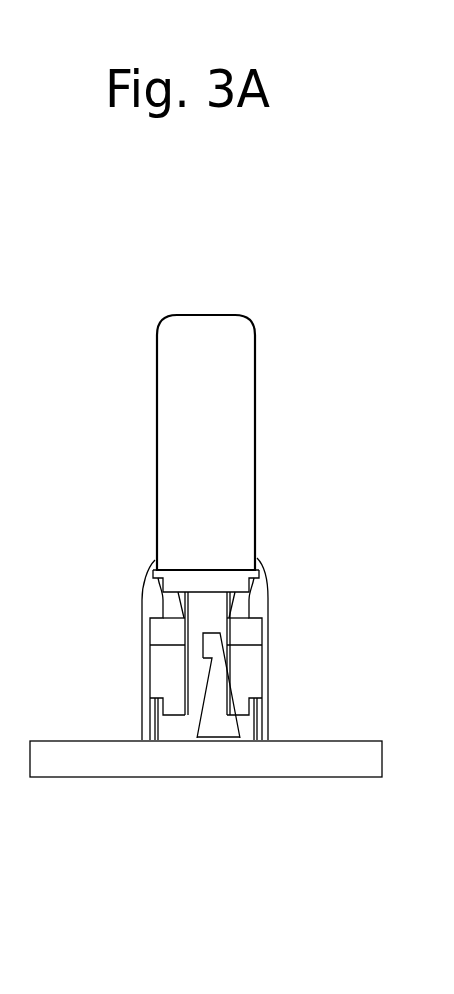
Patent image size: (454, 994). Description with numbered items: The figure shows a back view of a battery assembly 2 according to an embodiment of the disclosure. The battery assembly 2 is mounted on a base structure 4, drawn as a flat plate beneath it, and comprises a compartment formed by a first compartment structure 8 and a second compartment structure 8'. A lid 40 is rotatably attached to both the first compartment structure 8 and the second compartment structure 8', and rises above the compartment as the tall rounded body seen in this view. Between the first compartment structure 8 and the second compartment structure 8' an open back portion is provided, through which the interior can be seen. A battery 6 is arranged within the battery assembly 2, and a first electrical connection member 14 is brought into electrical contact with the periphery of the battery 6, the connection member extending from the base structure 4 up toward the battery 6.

The battery assembly 2 is at (322, 368).
The base structure 4 is at (319, 740).
The battery 6 is at (209, 618).
The first compartment structure 8 is at (266, 655).
The second compartment structure 8' is at (144, 649).
The first electrical connection member 14 is at (222, 715).
The lid 40 is at (207, 323).